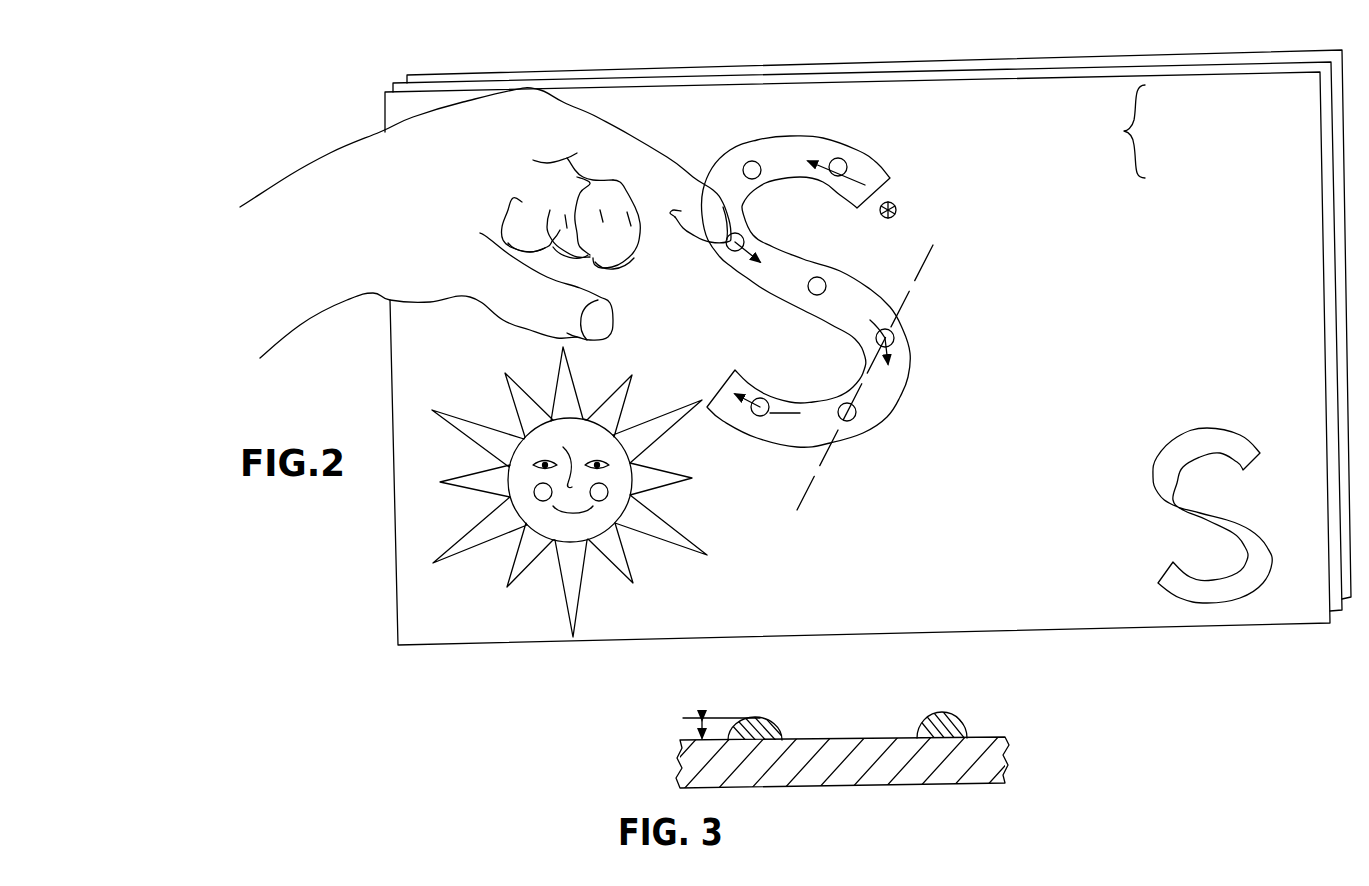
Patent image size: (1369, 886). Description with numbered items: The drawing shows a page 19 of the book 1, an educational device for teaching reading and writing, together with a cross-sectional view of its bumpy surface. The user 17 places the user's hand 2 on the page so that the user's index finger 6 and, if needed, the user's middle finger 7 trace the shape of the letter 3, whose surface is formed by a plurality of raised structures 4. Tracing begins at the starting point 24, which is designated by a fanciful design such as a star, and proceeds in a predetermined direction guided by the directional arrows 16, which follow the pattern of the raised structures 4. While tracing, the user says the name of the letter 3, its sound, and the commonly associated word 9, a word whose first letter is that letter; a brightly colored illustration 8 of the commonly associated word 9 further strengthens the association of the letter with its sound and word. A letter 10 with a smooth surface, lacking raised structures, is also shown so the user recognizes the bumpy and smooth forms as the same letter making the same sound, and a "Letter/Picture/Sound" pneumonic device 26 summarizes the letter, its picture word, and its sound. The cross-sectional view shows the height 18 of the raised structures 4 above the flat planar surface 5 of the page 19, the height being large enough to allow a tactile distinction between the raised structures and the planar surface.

In FIG. 2, the book 1 is at (1190, 46).
In FIG. 2, the user's hand 2 is at (315, 158).
In FIG. 2, the letter with bumpy surface 3 is at (873, 153).
In FIG. 2, the raised structures 4 is at (751, 161).
In FIG. 3, the raised structures 4 is at (780, 723).
In FIG. 2, the book with planar surface 5 is at (928, 612).
In FIG. 3, the book with planar surface 5 is at (852, 738).
In FIG. 2, the user's index finger 6 is at (673, 160).
In FIG. 2, the user's middle finger 7 is at (637, 267).
In FIG. 2, the illustration of commonly associated word 8 is at (578, 530).
In FIG. 2, the commonly associated word 9 is at (447, 636).
In FIG. 2, the letter with smooth surface 10 is at (1215, 600).
In FIG. 2, the directional arrows 16 is at (845, 195).
In FIG. 2, the user 17 is at (345, 305).
In FIG. 3, the height of raised structure 18 is at (700, 730).
In FIG. 2, the page 19 is at (1226, 289).
In FIG. 3, the page 19 is at (840, 777).
In FIG. 2, the starting point 24 is at (898, 209).
In FIG. 2, the "Letter/Picture/Sound" pneumonic device 26 is at (1201, 131).